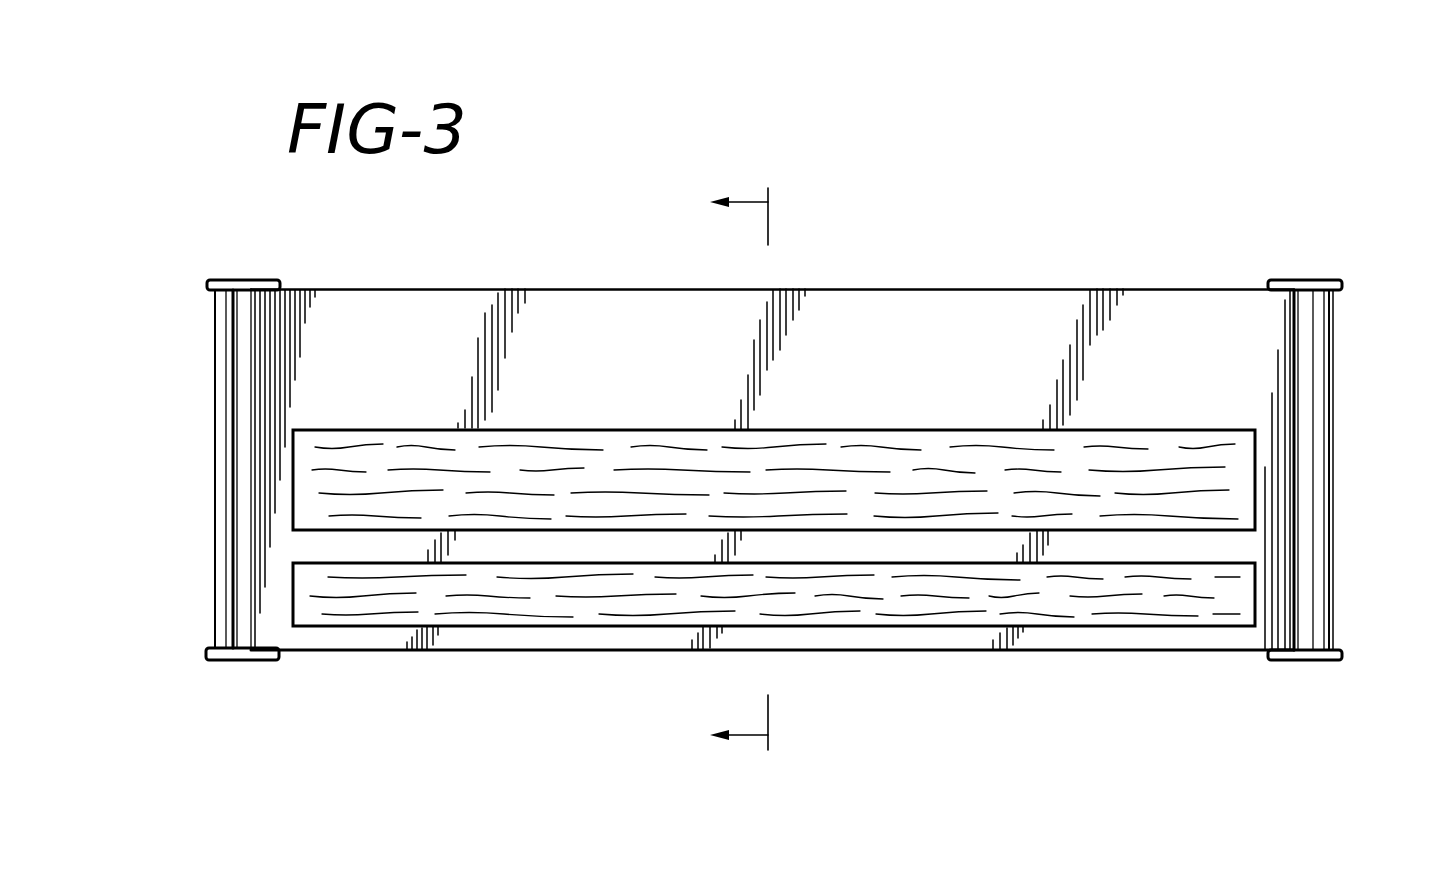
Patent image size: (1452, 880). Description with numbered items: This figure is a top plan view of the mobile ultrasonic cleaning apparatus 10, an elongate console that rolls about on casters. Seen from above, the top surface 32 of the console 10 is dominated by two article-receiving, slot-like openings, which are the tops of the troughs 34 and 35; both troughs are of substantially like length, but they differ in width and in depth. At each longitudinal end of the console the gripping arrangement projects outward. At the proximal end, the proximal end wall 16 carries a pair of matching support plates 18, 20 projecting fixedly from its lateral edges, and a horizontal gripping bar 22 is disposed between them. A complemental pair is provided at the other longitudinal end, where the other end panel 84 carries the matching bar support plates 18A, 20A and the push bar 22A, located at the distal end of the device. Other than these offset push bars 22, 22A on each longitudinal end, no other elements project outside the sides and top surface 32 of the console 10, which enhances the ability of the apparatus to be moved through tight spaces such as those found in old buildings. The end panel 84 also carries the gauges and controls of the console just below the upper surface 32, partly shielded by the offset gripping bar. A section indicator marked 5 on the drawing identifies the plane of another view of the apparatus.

The mobile ultrasonic cleaning apparatus 10 is at (1242, 186).
The section line for FIG. 5 is at (752, 469).
The proximal end wall 16 is at (252, 414).
The support plate 18 is at (210, 283).
The support plate 18A is at (1340, 283).
The support plate 20 is at (208, 655).
The bar support plate 20A is at (1340, 658).
The gripping bar 22 is at (231, 531).
The push bar 22A is at (1328, 490).
The top surface 32 is at (975, 315).
The trough 34 is at (608, 460).
The trough 35 is at (597, 603).
The end panel 84 is at (1298, 395).